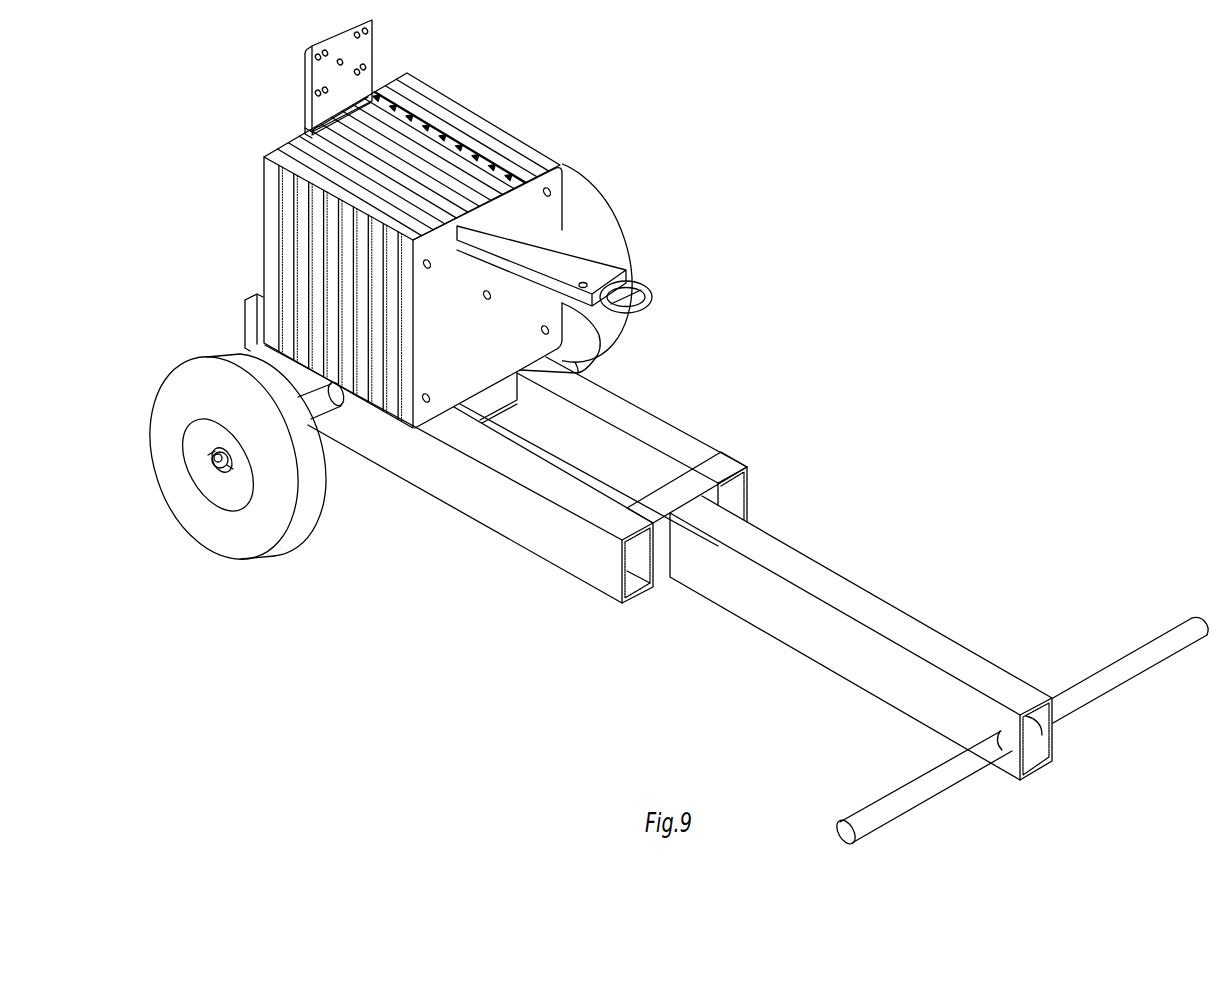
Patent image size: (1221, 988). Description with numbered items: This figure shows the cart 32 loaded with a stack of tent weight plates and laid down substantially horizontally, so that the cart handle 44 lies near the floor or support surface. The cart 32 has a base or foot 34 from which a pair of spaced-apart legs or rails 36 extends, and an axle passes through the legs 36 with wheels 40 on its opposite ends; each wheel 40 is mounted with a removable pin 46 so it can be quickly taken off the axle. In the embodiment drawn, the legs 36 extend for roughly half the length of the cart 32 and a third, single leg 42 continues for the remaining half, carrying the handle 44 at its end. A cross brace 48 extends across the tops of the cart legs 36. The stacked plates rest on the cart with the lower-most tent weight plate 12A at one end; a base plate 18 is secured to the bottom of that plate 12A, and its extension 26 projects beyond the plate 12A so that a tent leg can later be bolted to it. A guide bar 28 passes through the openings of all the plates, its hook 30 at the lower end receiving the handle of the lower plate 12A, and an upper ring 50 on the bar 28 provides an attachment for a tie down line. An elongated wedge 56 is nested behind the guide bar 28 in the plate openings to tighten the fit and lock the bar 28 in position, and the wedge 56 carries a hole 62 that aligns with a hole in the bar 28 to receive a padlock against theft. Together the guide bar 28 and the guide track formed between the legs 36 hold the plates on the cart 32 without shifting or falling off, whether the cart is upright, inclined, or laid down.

The lower-most tent weight plate 12A is at (417, 80).
The base plate 18 is at (368, 34).
The extension 26 is at (366, 60).
The guide bar 28 is at (570, 250).
The hook 30 is at (328, 121).
The cart 32 is at (765, 255).
The foot 34 is at (246, 301).
The legs 36 is at (651, 423).
The wheels 40 is at (208, 357).
The single leg 42 is at (863, 598).
The handle 44 is at (1118, 665).
The removable pin 46 is at (212, 461).
The cross brace 48 is at (683, 488).
The upper ring 50 is at (652, 296).
The wedge 56 is at (510, 265).
The hole 62 is at (586, 284).